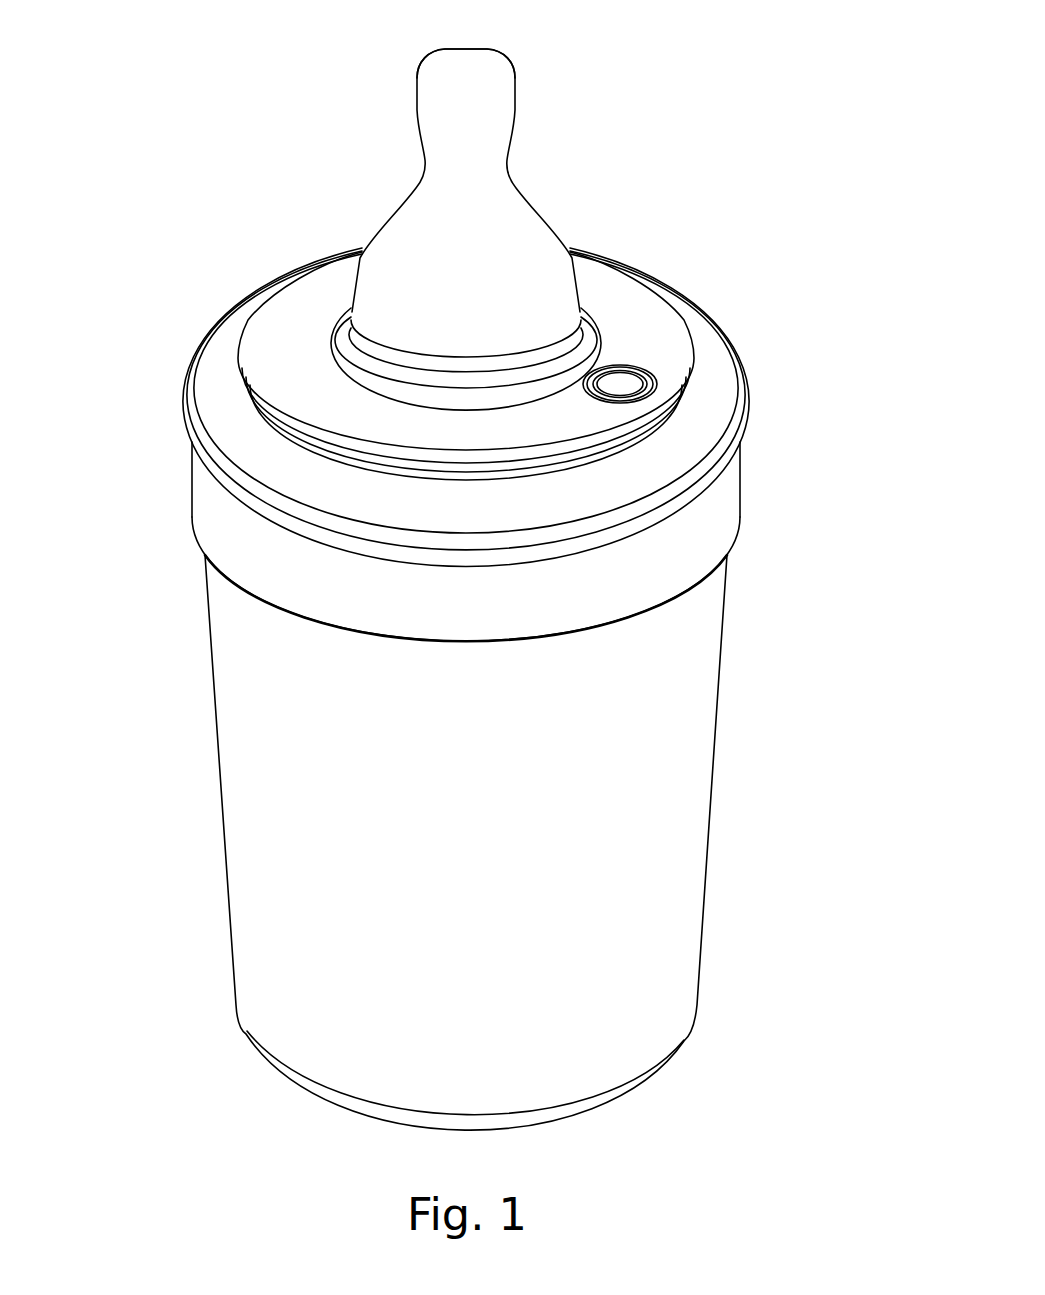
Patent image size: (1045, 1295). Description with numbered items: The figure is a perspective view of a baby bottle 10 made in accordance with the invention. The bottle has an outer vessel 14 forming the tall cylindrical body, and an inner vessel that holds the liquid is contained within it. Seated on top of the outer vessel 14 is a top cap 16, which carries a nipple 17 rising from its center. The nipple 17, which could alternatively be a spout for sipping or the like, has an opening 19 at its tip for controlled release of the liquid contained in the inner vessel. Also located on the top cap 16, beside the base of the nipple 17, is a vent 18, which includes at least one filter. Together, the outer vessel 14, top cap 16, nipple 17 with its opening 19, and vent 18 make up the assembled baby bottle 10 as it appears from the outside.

The baby bottle 10 is at (711, 67).
The outer vessel 14 is at (710, 840).
The top cap 16 is at (209, 279).
The nipple 17 is at (382, 222).
The vent 18 is at (625, 368).
The opening 19 is at (482, 50).